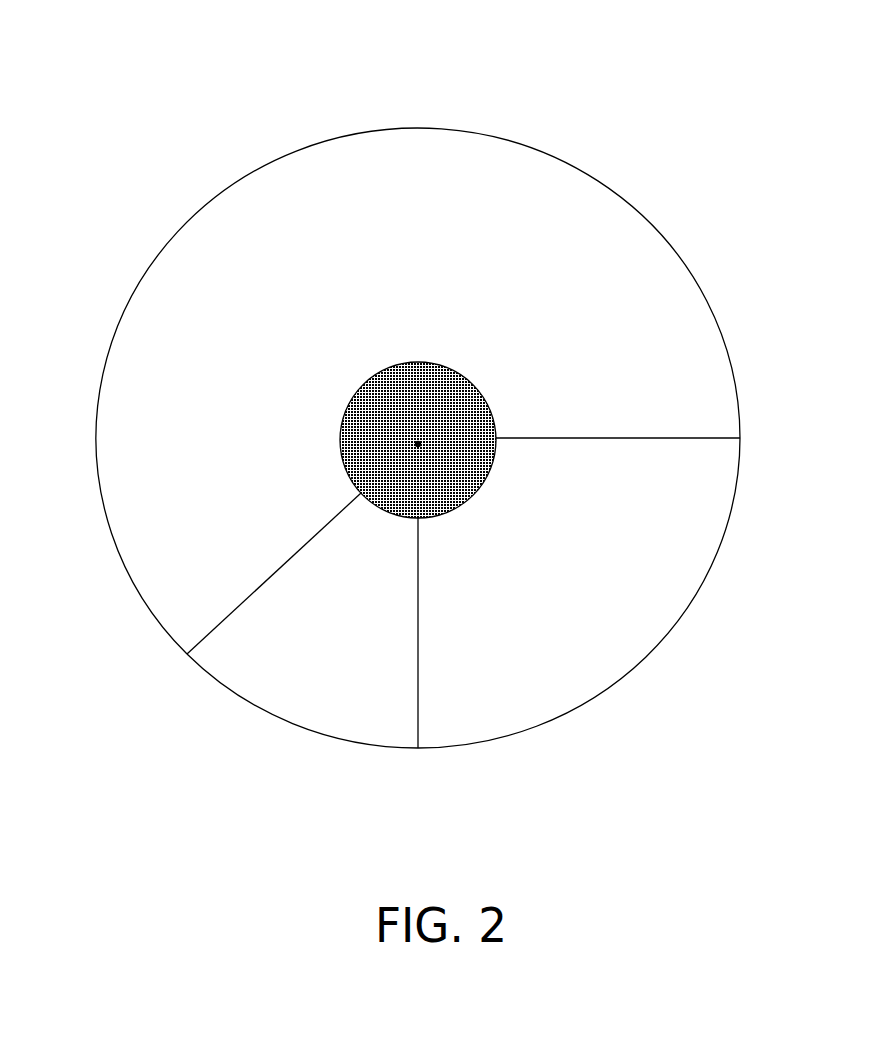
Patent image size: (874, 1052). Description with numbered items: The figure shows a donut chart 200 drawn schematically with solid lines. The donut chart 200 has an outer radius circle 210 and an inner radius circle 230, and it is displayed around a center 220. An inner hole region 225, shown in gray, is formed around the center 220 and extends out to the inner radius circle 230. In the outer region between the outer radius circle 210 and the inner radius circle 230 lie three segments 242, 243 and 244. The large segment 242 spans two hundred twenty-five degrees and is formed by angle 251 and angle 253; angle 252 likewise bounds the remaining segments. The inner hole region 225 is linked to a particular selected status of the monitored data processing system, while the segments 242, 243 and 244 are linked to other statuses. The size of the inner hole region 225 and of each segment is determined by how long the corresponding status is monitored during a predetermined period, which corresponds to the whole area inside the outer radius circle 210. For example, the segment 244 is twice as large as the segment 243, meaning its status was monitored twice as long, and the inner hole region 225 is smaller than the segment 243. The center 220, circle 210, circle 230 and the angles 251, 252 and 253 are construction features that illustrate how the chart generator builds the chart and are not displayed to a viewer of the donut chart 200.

The donut chart 200 is at (784, 110).
The outer radius circle 210 is at (446, 128).
The center 220 is at (420, 445).
The inner hole region 225 is at (372, 400).
The inner radius circle 230 is at (446, 366).
The large segment 242 is at (158, 595).
The segment 243 is at (305, 705).
The segment 244 is at (460, 733).
The angle 251 is at (275, 578).
The angle 252 is at (418, 613).
The angle 253 is at (628, 438).